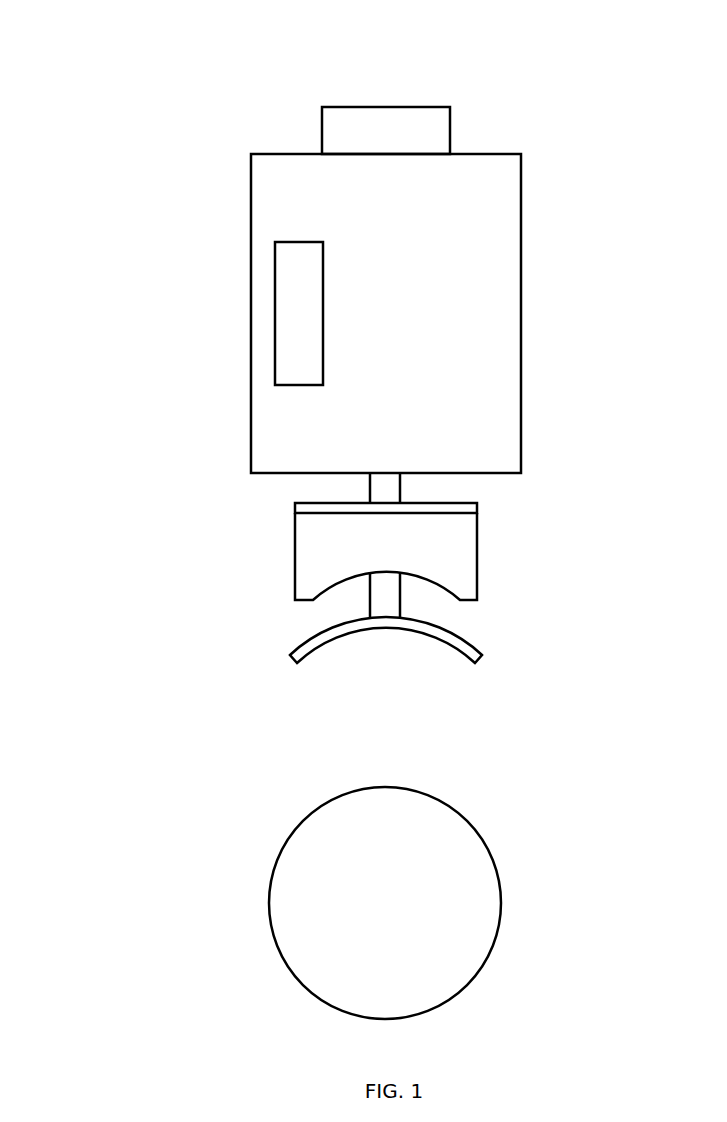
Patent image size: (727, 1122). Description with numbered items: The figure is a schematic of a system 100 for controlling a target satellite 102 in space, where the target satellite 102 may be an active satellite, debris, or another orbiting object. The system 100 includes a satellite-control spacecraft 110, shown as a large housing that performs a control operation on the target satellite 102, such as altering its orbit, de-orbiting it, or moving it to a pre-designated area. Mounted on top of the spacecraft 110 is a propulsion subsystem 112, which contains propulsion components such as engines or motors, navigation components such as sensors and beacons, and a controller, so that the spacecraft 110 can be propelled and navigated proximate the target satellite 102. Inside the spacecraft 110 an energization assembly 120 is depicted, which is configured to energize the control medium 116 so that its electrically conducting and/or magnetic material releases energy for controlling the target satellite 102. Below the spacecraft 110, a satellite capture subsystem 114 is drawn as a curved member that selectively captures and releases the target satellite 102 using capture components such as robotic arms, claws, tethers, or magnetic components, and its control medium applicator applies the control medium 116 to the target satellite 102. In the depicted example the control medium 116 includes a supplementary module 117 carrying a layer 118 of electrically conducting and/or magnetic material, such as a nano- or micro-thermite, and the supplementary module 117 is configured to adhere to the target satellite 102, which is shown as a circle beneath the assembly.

The system 100 is at (131, 73).
The target satellite 102 is at (369, 917).
The satellite-control spacecraft 110 is at (286, 143).
The propulsion subsystem 112 is at (369, 144).
The satellite capture subsystem 114 is at (292, 634).
The control medium 116 is at (316, 565).
The supplementary module 117 is at (370, 564).
The layer 118 is at (477, 509).
The energization assembly 120 is at (283, 307).